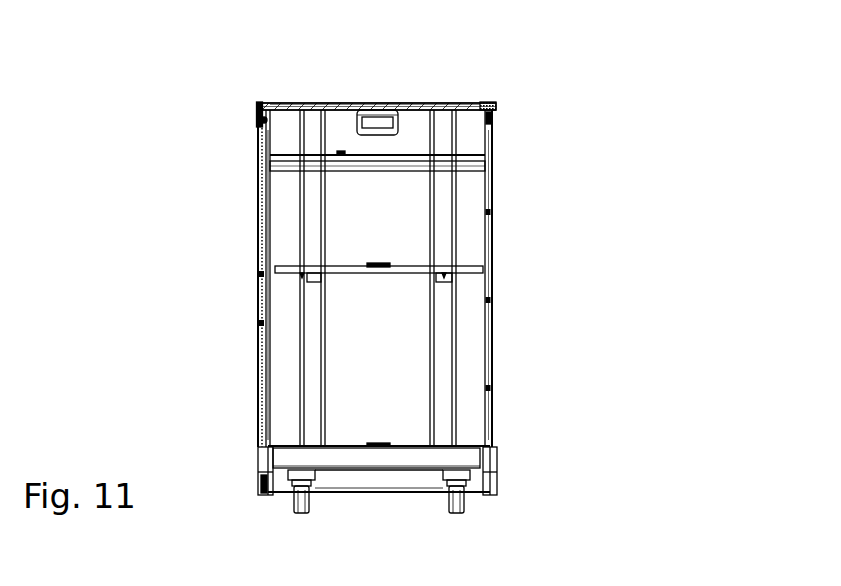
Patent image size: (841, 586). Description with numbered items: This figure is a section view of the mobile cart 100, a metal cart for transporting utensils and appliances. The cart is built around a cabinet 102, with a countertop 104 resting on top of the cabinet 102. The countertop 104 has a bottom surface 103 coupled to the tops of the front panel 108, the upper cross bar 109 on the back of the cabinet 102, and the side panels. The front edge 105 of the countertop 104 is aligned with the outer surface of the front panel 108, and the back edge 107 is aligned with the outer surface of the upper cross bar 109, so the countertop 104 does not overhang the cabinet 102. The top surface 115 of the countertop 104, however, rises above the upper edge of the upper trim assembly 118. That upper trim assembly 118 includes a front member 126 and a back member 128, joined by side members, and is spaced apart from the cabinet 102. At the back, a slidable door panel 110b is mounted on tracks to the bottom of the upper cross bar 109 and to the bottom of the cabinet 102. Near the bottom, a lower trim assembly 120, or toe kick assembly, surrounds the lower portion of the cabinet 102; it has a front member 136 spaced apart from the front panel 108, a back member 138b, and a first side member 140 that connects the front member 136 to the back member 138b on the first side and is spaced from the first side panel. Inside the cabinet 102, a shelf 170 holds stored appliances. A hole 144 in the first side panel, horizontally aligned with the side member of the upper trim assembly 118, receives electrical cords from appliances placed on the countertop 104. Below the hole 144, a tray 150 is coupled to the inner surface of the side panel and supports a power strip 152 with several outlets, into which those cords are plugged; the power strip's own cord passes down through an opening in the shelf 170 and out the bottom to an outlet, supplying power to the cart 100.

The mobile cart 100 is at (637, 23).
The cabinet 102 is at (523, 278).
The bottom surface 103 is at (418, 112).
The countertop 104 is at (433, 72).
The front edge 105 is at (497, 103).
The back edge 107 is at (258, 103).
The front panel 108 is at (488, 402).
The upper cross bar 109 is at (262, 167).
The back panel 110b is at (262, 340).
The top surface 115 is at (322, 103).
The upper trim assembly 118 is at (520, 123).
The lower trim assembly 120 is at (492, 508).
The front member 126 is at (500, 110).
The back member 128 is at (262, 118).
The front member 136 is at (495, 468).
The back member 138b is at (262, 485).
The first side member 140 is at (333, 480).
The hole 144 is at (393, 136).
The tray 150 is at (420, 172).
The power strip 152 is at (358, 158).
The shelf 170 is at (355, 270).